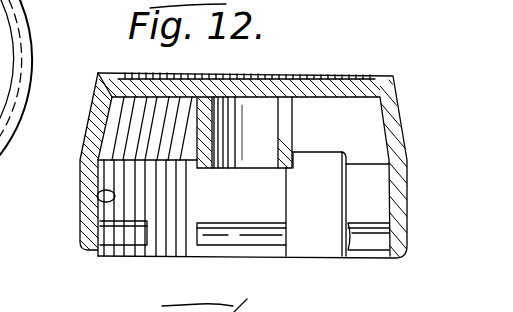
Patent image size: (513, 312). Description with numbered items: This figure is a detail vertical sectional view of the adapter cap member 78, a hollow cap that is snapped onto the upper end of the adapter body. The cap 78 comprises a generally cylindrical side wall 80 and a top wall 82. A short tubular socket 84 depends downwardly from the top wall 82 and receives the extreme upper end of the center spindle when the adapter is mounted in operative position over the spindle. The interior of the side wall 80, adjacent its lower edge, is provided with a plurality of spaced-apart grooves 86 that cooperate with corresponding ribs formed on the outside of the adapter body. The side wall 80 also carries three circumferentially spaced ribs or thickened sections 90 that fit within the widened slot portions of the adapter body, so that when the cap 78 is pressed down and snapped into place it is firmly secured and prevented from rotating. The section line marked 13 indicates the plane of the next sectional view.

The adapter cap member 78 is at (402, 121).
The side wall 80 is at (82, 180).
The top wall 82 is at (327, 83).
The tubular socket 84 is at (283, 137).
The grooves 86 is at (130, 236).
The ribs or thickened sections 90 is at (100, 194).
The section line 13- 13 is at (98, 261).